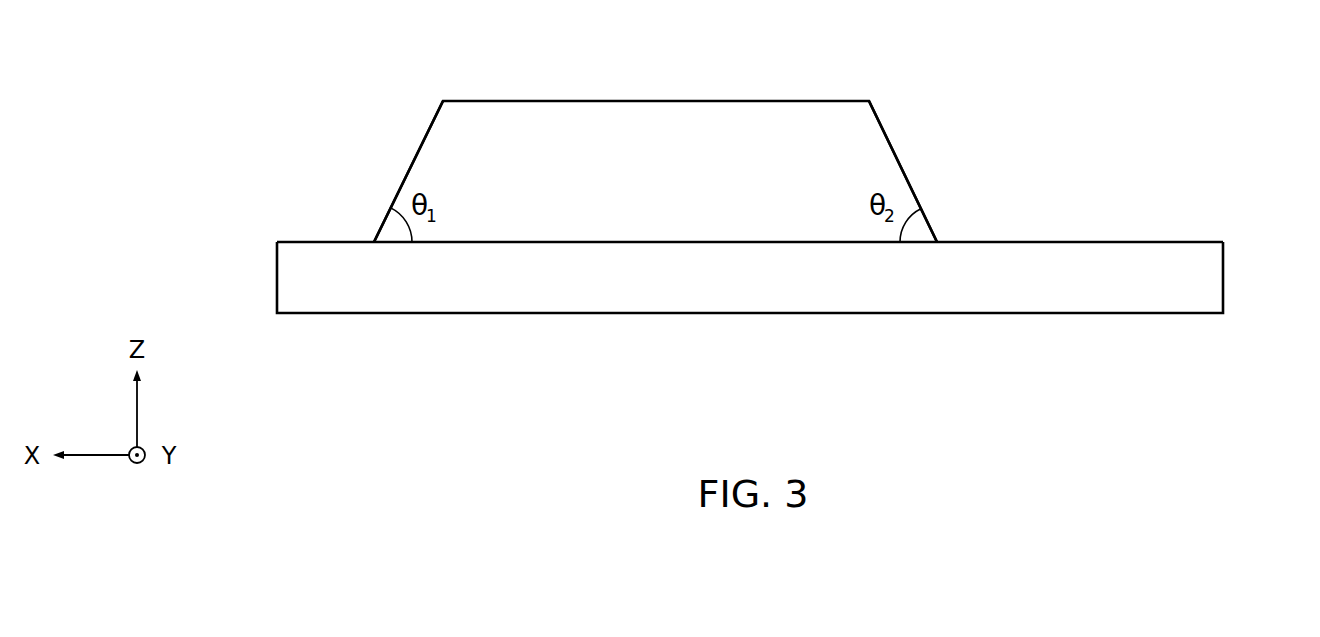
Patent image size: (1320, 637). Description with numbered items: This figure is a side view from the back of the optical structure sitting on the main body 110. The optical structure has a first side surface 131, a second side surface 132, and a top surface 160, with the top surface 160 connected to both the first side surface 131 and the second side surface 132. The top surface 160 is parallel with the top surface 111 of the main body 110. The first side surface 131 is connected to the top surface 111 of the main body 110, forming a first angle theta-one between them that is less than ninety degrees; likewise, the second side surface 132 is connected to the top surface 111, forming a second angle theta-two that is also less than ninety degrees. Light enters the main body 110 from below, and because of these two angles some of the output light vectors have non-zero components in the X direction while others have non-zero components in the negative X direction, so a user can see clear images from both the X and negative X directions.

The main body 110 is at (1205, 277).
The top surface of the main body 111 is at (1188, 242).
The top surface 160 is at (688, 100).
The first side surface 131 is at (403, 171).
The second side surface 132 is at (905, 172).